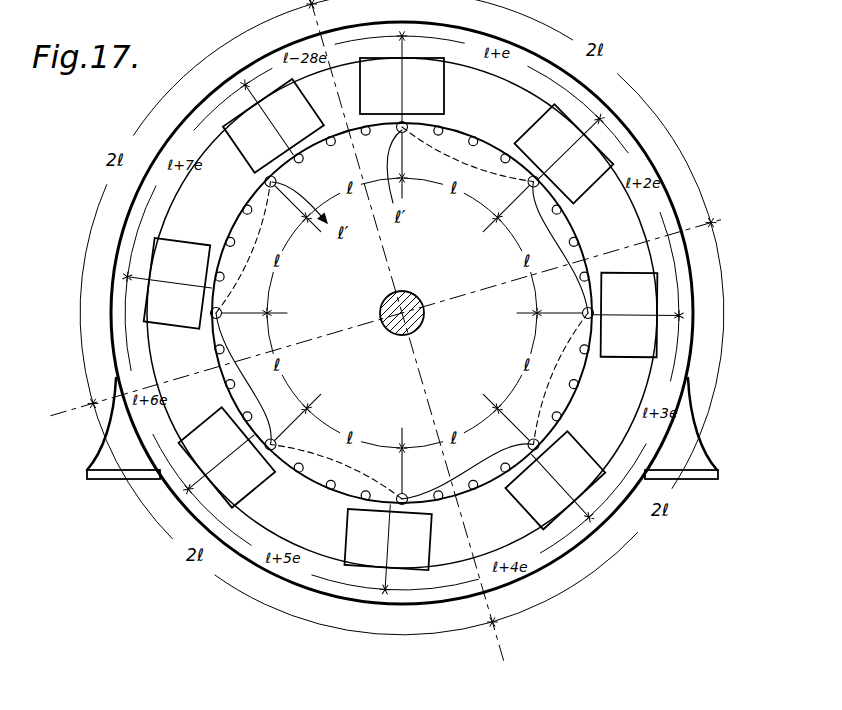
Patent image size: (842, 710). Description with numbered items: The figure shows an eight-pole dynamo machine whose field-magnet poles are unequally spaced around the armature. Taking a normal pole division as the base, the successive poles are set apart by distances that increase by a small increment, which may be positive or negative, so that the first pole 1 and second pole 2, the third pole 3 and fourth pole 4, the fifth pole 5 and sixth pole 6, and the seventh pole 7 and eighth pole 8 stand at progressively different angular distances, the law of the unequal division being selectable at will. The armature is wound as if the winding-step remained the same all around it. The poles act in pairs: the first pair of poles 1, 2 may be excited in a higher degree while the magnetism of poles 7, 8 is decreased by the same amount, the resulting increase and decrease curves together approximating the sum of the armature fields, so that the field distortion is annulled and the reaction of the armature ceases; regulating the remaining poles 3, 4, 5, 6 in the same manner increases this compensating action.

The first pole 1 is at (402, 76).
The second pole 2 is at (571, 147).
The third pole 3 is at (639, 315).
The fourth pole 4 is at (562, 487).
The fifth pole 5 is at (387, 549).
The sixth pole 6 is at (219, 464).
The seventh pole 7 is at (168, 282).
The eighth pole 8 is at (268, 117).